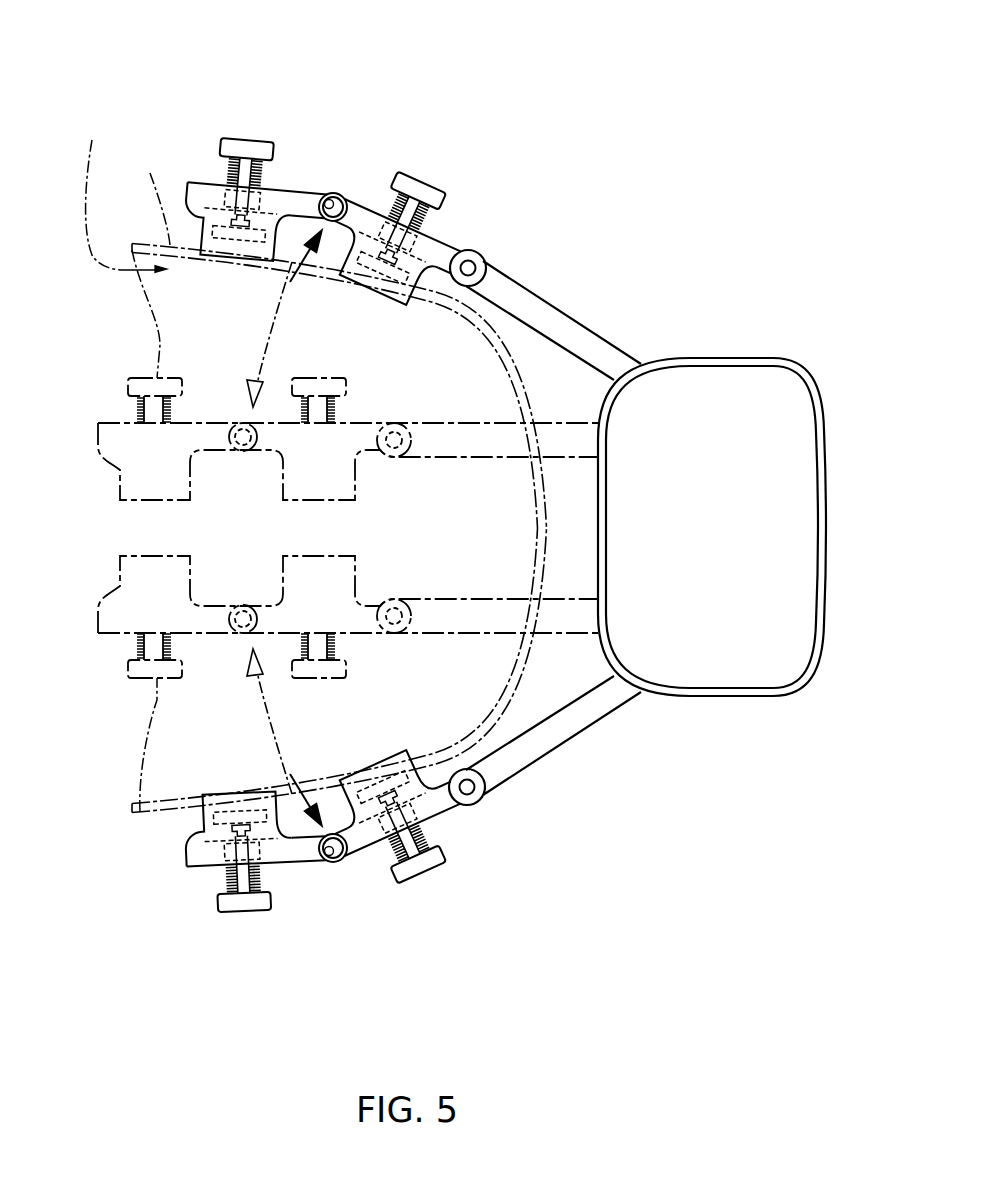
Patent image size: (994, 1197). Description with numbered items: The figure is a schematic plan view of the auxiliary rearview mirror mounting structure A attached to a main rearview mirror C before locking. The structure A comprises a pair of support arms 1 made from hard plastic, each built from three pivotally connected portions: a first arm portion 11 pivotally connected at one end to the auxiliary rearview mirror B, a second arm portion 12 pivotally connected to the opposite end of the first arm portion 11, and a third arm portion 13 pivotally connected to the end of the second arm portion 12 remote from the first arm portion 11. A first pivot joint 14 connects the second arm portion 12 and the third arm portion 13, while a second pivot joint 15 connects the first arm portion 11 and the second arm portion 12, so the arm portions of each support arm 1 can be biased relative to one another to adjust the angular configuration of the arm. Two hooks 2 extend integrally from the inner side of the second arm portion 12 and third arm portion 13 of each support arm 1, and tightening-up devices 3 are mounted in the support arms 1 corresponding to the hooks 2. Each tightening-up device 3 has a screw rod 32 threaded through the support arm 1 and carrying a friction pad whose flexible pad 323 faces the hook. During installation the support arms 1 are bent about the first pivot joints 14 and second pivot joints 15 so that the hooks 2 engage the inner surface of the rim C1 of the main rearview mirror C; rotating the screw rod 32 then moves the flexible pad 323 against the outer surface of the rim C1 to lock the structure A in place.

The support arm 1 is at (210, 183).
The hook 2 is at (447, 271).
The tightening-up device 3 is at (243, 142).
The first arm portion 11 is at (593, 350).
The second arm portion 12 is at (443, 247).
The third arm portion 13 is at (298, 194).
The first pivot joint 14 is at (329, 196).
The second pivot joint 15 is at (470, 266).
The screw rod 32 is at (429, 866).
The flexible pad 323 is at (440, 792).
The auxiliary rearview mirror mounting structure A is at (598, 297).
The auxiliary rearview mirror B is at (739, 412).
The main rearview mirror C is at (122, 190).
The rim C1 is at (150, 474).